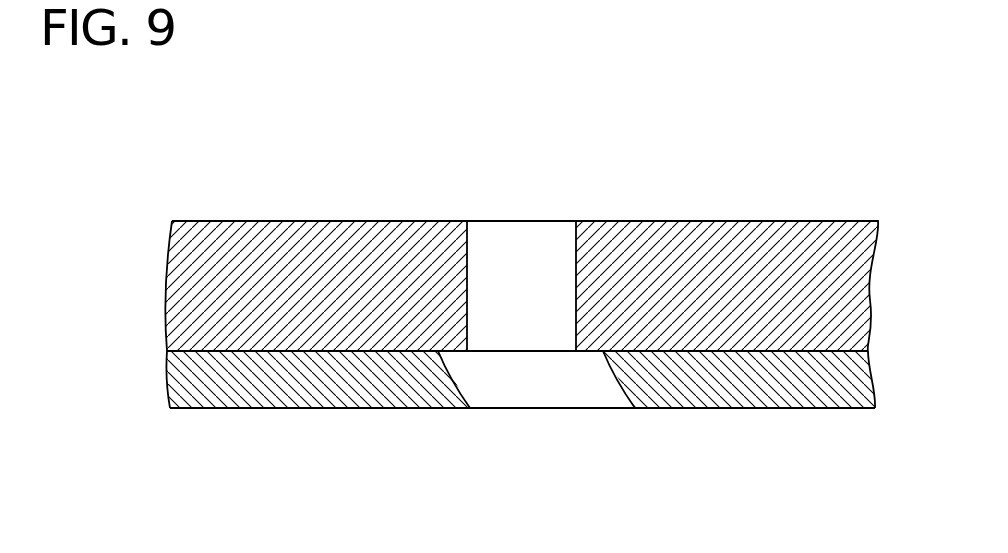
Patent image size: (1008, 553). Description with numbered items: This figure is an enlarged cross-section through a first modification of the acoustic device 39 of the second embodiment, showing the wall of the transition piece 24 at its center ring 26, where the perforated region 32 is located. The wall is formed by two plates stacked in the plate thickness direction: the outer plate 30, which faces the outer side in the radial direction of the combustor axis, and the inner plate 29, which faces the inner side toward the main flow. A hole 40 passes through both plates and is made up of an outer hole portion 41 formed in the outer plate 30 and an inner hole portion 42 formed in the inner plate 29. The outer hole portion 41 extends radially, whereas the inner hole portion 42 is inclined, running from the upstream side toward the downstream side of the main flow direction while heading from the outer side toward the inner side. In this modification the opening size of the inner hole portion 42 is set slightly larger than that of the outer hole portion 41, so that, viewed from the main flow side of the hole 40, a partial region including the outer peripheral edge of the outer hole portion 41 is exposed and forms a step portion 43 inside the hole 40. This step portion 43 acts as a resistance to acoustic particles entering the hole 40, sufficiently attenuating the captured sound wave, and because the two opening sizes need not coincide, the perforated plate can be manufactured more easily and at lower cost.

The transition piece 24 is at (305, 165).
The center ring 26 is at (486, 303).
The inner plate 29 is at (180, 385).
The outer plate 30 is at (183, 292).
The perforated region 32 is at (440, 435).
The acoustic device 39 is at (776, 170).
The hole 40 is at (580, 190).
The outer hole portion 41 is at (466, 248).
The inner hole portion 42 is at (457, 384).
The step portion 43 is at (588, 360).